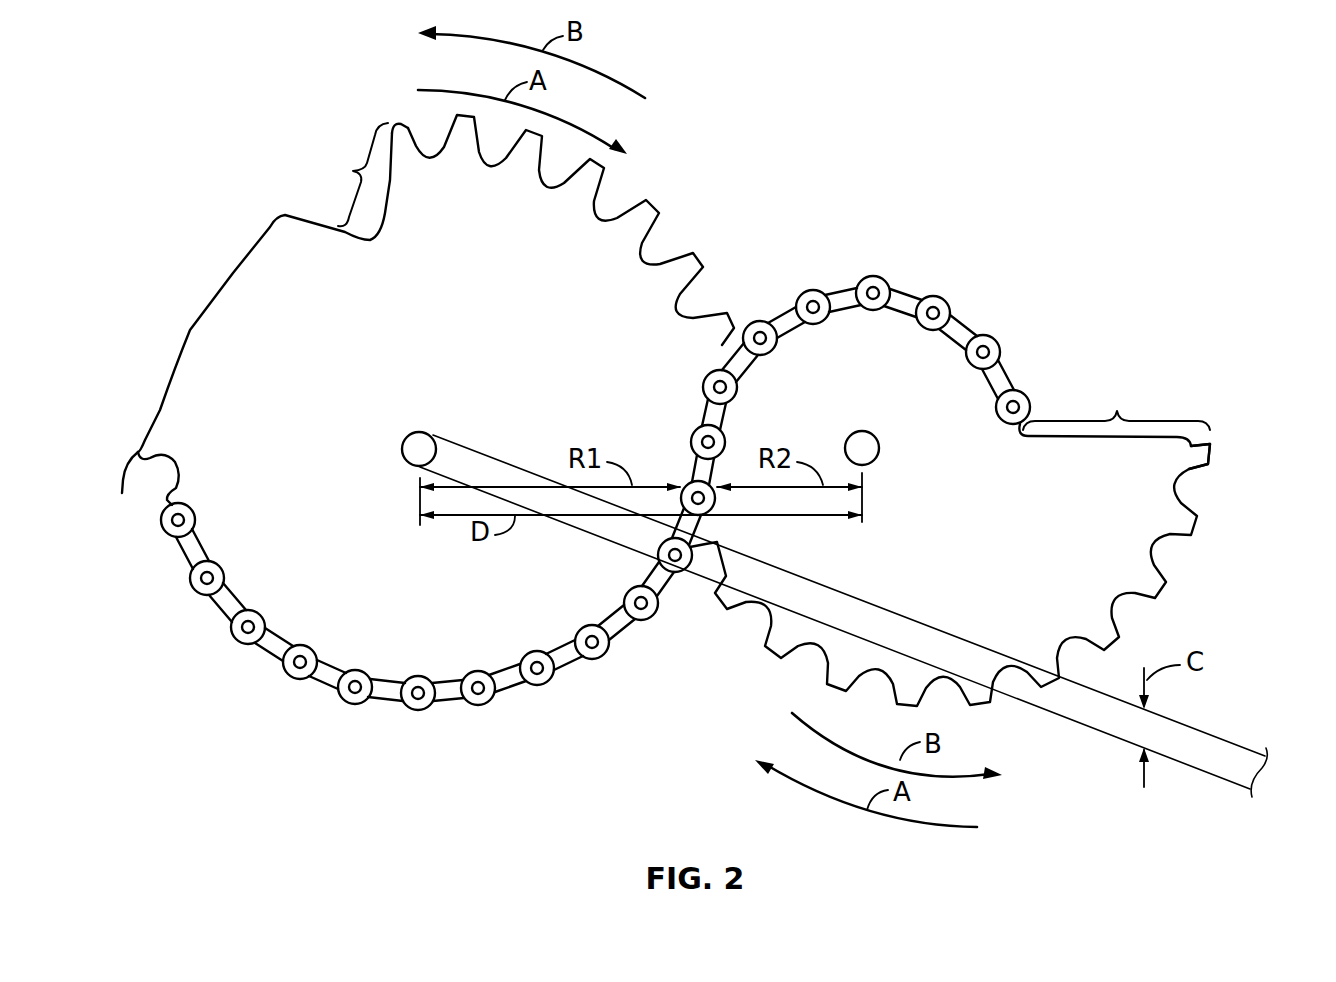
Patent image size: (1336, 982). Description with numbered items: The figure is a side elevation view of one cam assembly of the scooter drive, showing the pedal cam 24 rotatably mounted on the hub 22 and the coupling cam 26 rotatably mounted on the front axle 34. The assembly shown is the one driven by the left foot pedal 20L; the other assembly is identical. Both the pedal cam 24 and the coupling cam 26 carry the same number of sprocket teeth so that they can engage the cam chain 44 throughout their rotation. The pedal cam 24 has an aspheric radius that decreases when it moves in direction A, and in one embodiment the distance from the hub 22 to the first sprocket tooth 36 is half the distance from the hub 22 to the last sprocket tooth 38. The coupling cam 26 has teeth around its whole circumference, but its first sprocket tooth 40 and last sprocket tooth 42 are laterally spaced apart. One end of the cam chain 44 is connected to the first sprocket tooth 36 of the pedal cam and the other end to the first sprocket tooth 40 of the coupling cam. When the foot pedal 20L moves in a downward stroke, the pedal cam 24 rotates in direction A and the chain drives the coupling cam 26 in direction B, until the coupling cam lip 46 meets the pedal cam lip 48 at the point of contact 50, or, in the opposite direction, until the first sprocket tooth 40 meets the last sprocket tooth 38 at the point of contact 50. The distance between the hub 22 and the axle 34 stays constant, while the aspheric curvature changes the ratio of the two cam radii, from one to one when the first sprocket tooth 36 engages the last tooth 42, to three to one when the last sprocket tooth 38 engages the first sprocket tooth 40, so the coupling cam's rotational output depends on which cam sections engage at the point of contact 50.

The left foot pedal 20L is at (1213, 745).
The hub 22 is at (403, 446).
The pedal cam 24 is at (198, 276).
The coupling cam 26 is at (1080, 368).
The front axle 34 is at (880, 450).
The first sprocket tooth 36 is at (120, 489).
The last sprocket tooth 38 is at (402, 126).
The first sprocket tooth 40 is at (1033, 405).
The last sprocket tooth 42 is at (1213, 444).
The cam chain 44 is at (768, 303).
The coupling cam lip 46 is at (1116, 403).
The pedal cam lip 48 is at (352, 174).
The point of contact 50 is at (691, 441).